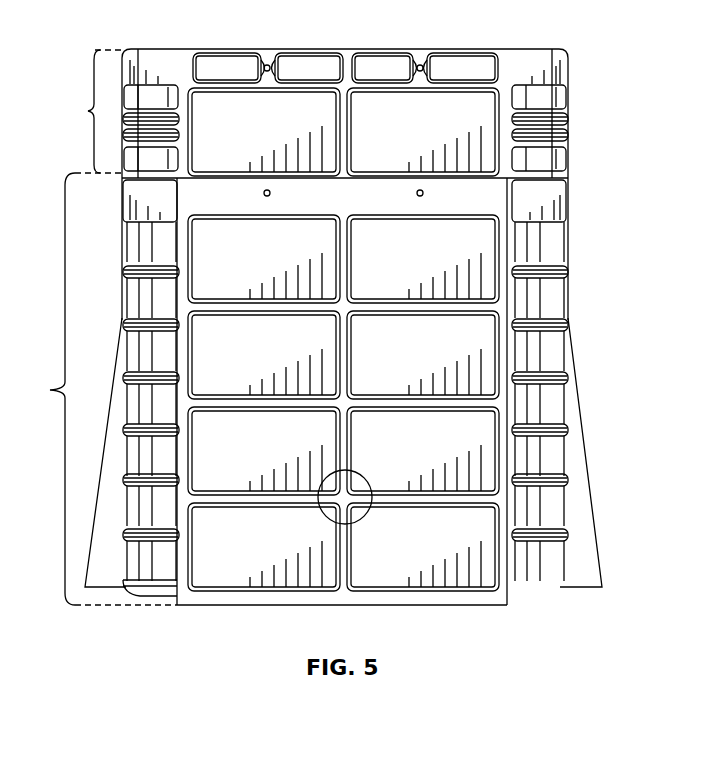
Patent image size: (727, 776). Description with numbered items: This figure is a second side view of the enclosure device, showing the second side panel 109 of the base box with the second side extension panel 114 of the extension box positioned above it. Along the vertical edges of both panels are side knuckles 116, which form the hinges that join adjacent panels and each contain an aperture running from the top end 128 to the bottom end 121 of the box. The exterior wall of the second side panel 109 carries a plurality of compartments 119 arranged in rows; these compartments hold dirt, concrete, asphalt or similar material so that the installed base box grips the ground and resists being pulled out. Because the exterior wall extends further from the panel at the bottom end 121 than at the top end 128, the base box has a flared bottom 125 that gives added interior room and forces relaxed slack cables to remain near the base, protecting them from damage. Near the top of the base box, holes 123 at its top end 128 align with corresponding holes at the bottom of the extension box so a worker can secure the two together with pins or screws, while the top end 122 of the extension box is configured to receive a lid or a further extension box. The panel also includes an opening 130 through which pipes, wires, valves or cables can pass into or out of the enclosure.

The second side panel 109 is at (90, 389).
The second side extension panel 114 is at (86, 111).
The side knuckles 116 is at (165, 578).
The compartments 119 is at (265, 452).
The bottom end 121 is at (460, 598).
The top end of extension box 122 is at (287, 52).
The holes 123 is at (423, 61).
The flared bottom 125 is at (580, 573).
The top end 128 is at (298, 197).
The opening 130 is at (345, 500).